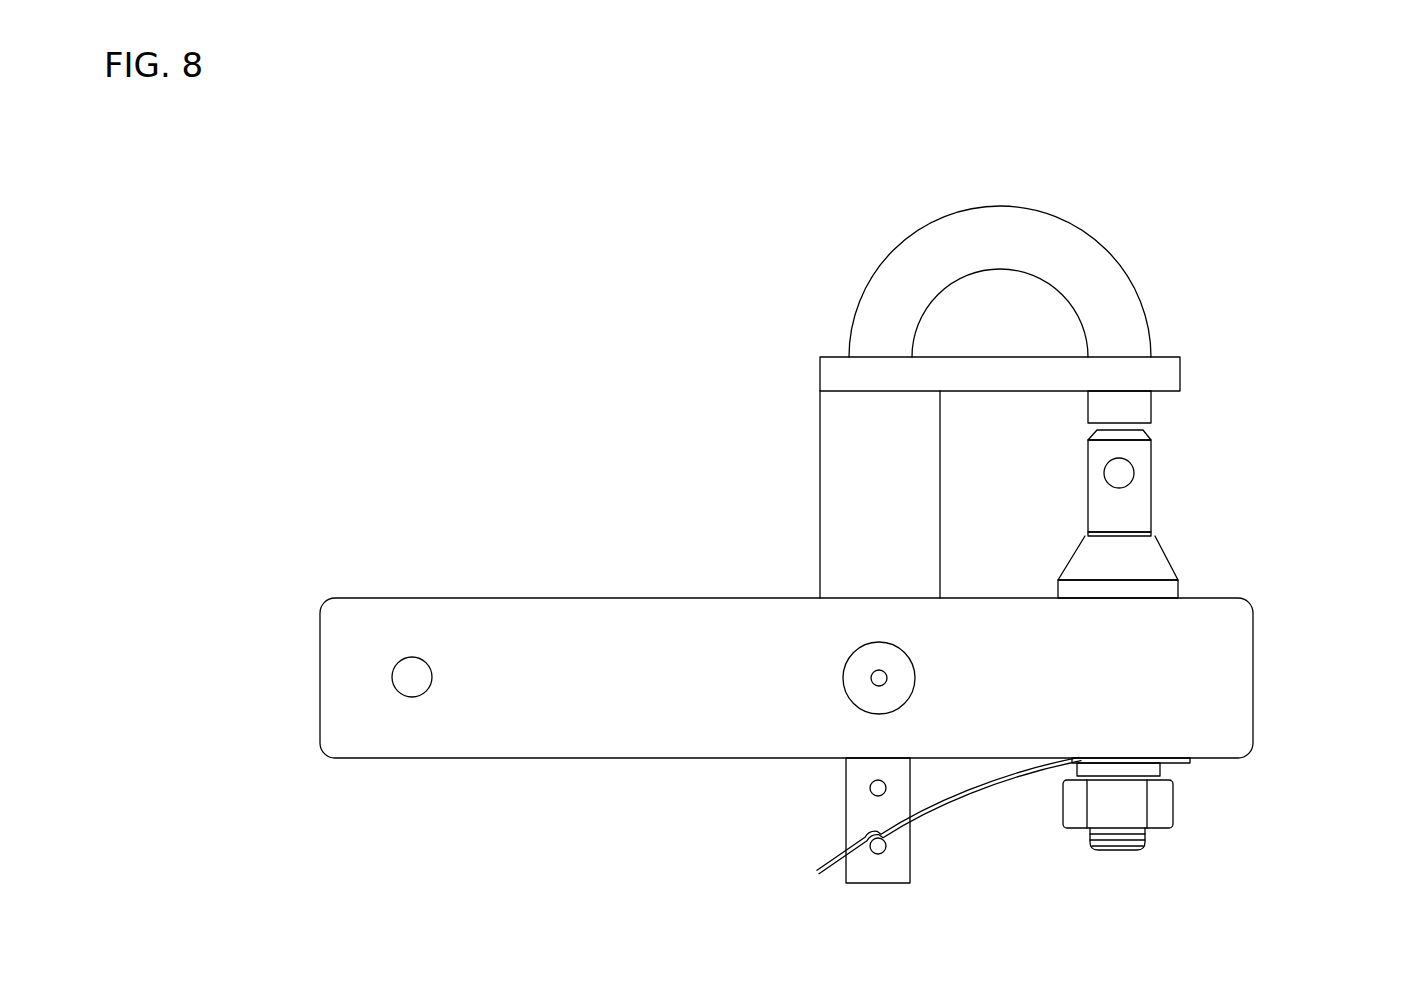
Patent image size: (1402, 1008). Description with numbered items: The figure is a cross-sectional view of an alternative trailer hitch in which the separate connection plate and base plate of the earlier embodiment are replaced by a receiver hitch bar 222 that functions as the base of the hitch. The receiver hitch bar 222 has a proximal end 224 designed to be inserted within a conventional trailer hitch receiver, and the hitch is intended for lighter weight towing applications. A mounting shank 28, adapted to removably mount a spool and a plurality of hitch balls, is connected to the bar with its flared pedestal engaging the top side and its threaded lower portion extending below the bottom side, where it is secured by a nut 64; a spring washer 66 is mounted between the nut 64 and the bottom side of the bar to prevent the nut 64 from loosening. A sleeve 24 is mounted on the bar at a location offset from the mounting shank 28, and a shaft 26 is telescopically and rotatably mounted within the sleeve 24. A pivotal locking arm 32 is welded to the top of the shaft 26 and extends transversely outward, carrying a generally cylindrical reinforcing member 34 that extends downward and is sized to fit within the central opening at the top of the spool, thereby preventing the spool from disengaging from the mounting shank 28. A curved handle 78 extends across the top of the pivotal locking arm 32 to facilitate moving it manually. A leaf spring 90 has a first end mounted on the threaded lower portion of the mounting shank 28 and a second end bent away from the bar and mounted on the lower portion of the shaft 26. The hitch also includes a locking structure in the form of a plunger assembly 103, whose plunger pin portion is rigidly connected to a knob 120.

The curved handle 78 is at (1043, 210).
The pivotal locking arm 32 is at (1180, 358).
The reinforcing member 34 is at (1152, 407).
The sleeve 24 is at (820, 493).
The mounting shank 28 is at (1167, 553).
The receiver hitch bar 222 is at (1253, 649).
The proximal end 224 is at (320, 673).
The plunger assembly 103 is at (806, 680).
The knob 120 is at (915, 678).
The shaft 26 is at (846, 783).
The leaf spring 90 is at (970, 788).
The spring washer 66 is at (1180, 772).
The nut 64 is at (1173, 810).